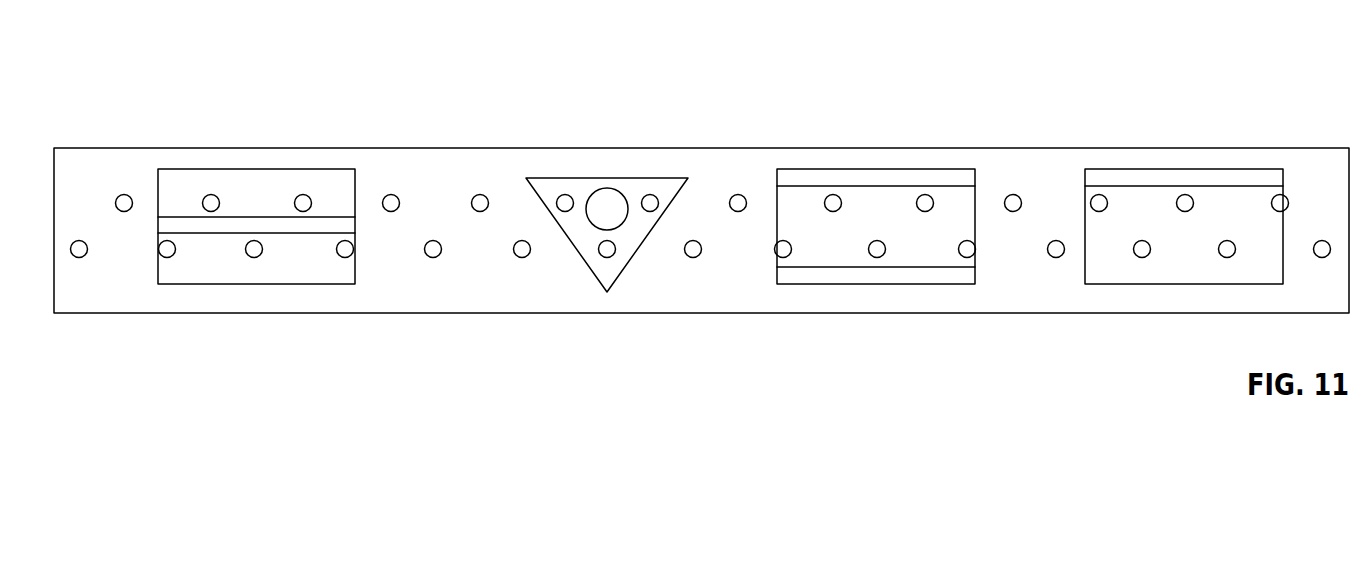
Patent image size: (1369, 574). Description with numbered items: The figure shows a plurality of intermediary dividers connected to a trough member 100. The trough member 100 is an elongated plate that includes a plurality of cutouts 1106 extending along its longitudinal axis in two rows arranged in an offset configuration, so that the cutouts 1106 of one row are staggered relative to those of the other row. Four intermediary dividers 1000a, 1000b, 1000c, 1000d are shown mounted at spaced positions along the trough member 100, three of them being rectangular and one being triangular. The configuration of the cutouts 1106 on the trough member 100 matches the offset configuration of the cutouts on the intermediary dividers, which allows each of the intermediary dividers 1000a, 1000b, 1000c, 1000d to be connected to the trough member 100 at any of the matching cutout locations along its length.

The trough member 100 is at (490, 300).
The intermediary divider 1000a is at (273, 188).
The intermediary divider 1000b is at (1146, 195).
The intermediary divider 1000c is at (883, 195).
The intermediary divider 1000d is at (583, 190).
The cutouts 1106 is at (80, 253).